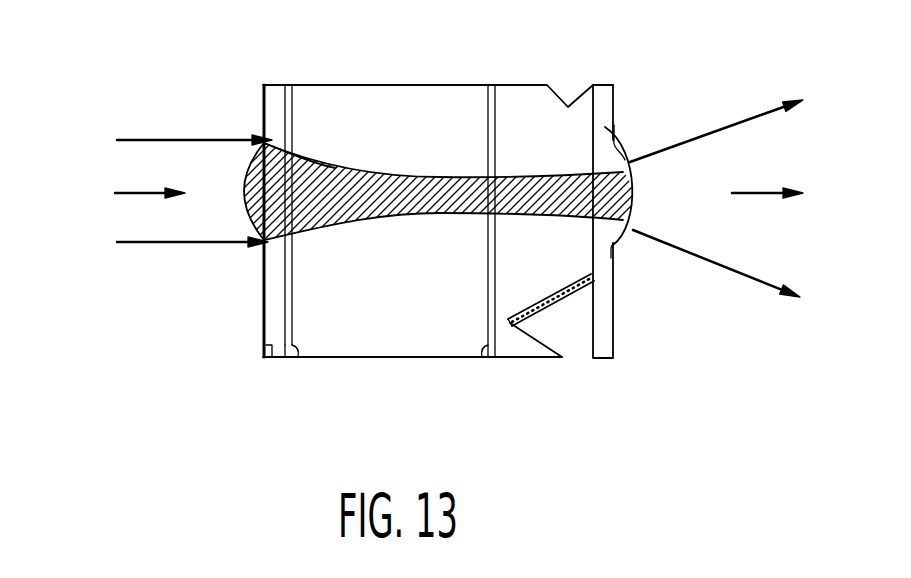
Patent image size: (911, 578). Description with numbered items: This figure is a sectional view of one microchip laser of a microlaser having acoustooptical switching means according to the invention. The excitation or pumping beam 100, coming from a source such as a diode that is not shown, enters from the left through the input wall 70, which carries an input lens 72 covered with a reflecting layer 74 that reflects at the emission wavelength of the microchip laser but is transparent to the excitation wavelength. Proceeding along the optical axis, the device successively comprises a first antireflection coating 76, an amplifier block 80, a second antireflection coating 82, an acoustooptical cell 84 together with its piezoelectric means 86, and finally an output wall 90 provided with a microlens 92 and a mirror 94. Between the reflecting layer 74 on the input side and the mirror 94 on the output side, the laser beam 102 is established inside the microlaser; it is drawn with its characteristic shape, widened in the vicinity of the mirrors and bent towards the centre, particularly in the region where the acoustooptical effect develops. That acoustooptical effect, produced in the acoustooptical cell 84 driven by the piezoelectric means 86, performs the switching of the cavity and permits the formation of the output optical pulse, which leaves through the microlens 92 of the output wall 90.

The excitation beam 100 is at (92, 197).
The laser beam 102 is at (370, 187).
The input wall 70 is at (264, 349).
The input lens 72 is at (285, 157).
The lens entrance surface 74 is at (250, 158).
The first antireflection coating 76 is at (300, 352).
The amplifier block 80 is at (393, 346).
The second antireflection coating 82 is at (483, 345).
The acoustooptical cell 84 is at (508, 305).
The piezoelectric means 86 is at (563, 307).
The output wall 90 is at (607, 337).
The microlens 92 is at (614, 125).
The mirror 94 is at (630, 160).